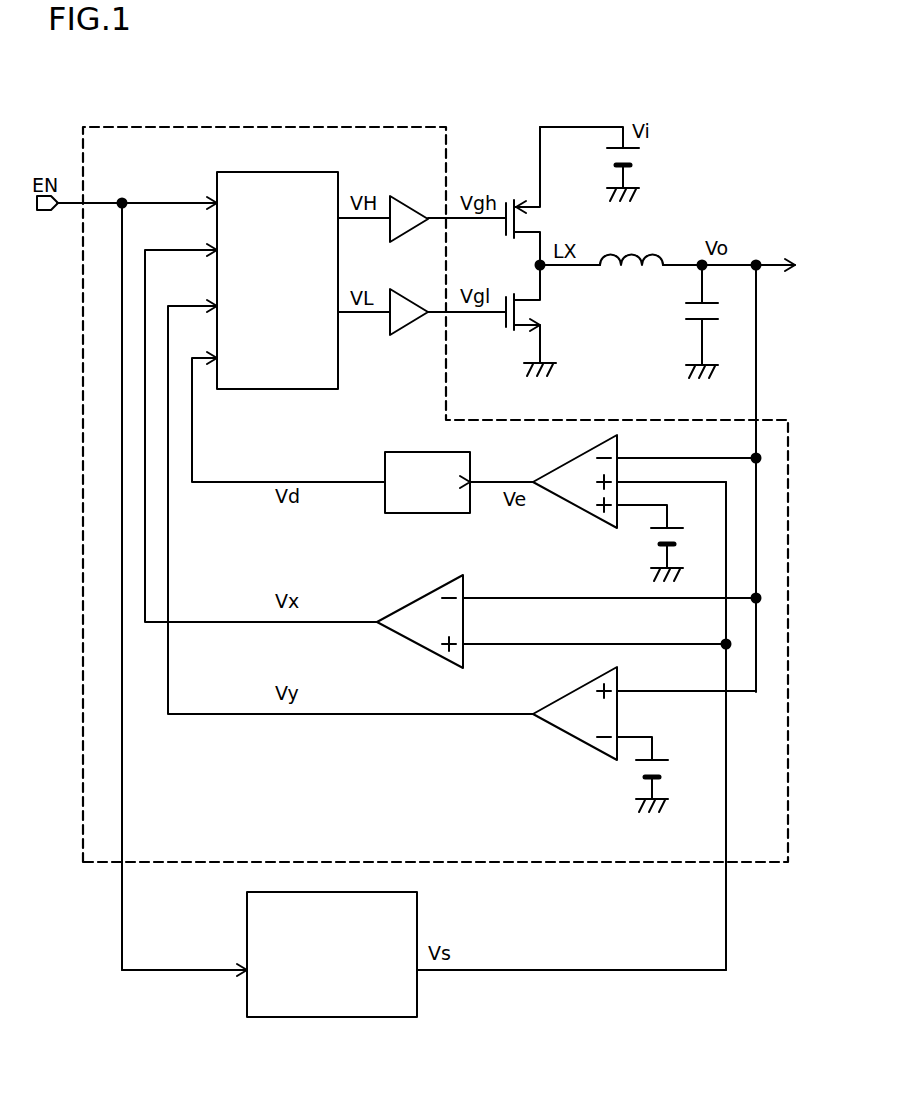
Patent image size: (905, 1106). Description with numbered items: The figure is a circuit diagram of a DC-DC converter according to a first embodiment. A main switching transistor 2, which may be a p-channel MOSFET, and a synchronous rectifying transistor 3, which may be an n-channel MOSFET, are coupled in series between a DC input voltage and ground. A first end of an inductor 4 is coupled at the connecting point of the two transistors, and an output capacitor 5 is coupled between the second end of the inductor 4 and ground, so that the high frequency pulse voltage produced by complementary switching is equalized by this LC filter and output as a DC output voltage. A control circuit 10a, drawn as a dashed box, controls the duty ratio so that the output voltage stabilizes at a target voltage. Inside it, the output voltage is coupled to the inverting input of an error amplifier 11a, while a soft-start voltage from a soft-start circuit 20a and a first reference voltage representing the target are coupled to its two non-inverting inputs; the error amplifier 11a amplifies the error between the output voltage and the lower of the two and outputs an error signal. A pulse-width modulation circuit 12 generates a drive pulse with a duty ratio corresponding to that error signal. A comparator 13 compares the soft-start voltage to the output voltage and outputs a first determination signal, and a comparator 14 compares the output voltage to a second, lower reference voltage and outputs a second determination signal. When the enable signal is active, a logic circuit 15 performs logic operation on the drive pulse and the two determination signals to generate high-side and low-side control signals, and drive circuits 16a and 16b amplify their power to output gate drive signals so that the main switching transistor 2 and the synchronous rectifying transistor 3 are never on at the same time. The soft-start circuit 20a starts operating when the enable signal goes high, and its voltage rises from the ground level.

The control circuit 10a is at (274, 127).
The main switching transistor 2 is at (520, 207).
The synchronous rectifying transistor 3 is at (520, 300).
The inductor 4 is at (628, 251).
The output capacitor 5 is at (688, 320).
The error amplifier 11a is at (585, 512).
The PWM circuit 12 is at (420, 515).
The comparator 13 is at (418, 654).
The comparator 14 is at (585, 744).
The logic circuit 15 is at (275, 391).
The drive circuit 16a is at (412, 207).
The drive circuit 16b is at (412, 300).
The soft-start circuit 20a is at (418, 998).